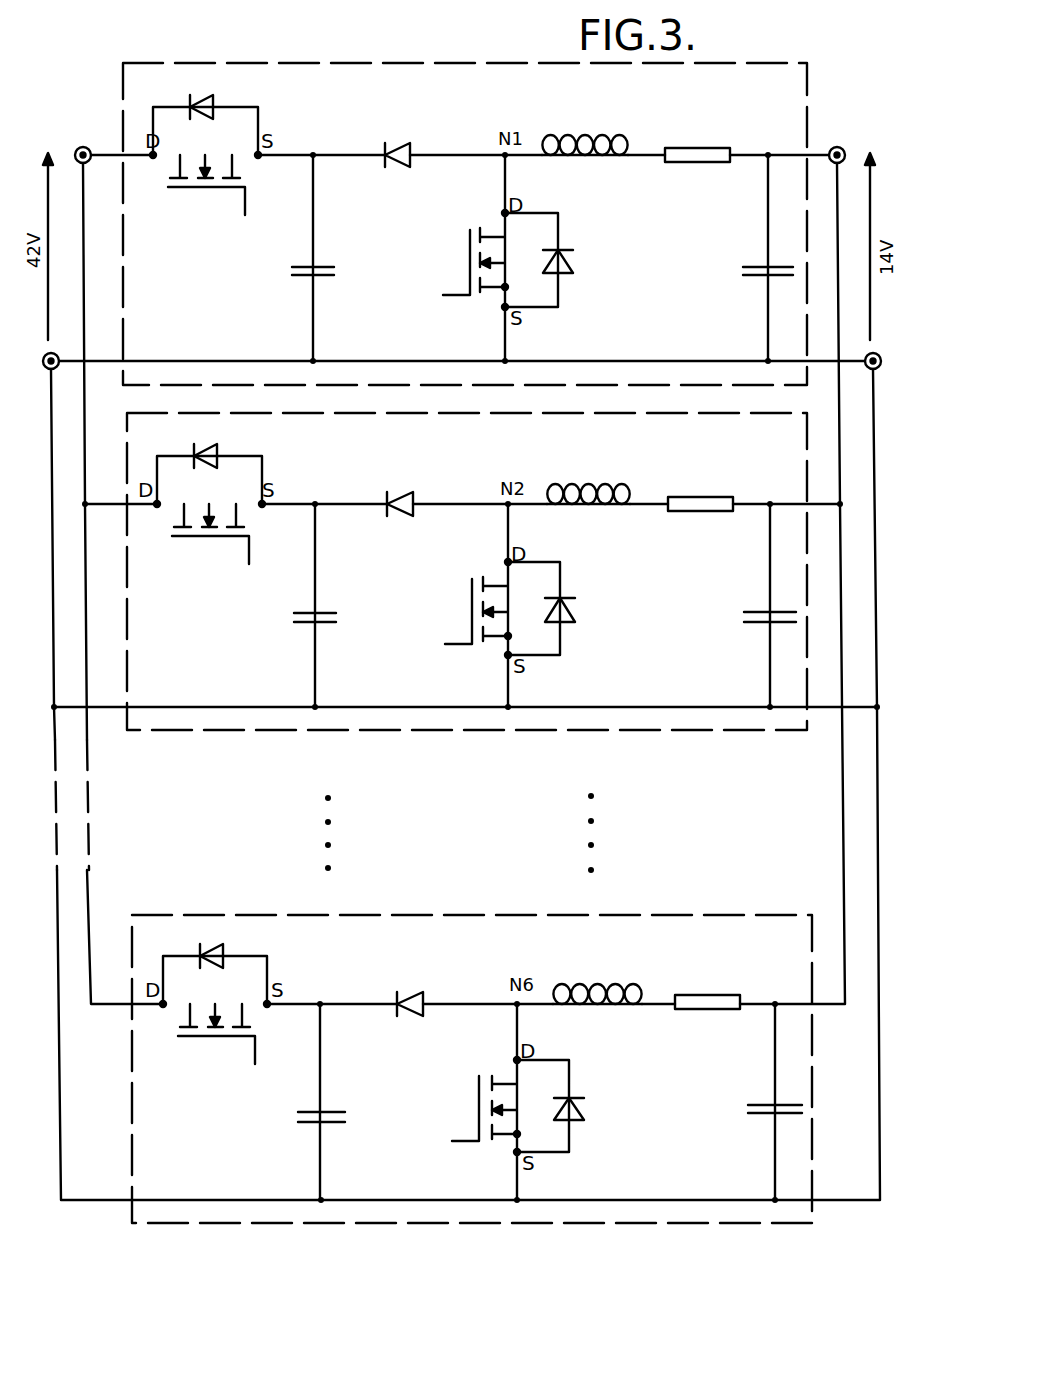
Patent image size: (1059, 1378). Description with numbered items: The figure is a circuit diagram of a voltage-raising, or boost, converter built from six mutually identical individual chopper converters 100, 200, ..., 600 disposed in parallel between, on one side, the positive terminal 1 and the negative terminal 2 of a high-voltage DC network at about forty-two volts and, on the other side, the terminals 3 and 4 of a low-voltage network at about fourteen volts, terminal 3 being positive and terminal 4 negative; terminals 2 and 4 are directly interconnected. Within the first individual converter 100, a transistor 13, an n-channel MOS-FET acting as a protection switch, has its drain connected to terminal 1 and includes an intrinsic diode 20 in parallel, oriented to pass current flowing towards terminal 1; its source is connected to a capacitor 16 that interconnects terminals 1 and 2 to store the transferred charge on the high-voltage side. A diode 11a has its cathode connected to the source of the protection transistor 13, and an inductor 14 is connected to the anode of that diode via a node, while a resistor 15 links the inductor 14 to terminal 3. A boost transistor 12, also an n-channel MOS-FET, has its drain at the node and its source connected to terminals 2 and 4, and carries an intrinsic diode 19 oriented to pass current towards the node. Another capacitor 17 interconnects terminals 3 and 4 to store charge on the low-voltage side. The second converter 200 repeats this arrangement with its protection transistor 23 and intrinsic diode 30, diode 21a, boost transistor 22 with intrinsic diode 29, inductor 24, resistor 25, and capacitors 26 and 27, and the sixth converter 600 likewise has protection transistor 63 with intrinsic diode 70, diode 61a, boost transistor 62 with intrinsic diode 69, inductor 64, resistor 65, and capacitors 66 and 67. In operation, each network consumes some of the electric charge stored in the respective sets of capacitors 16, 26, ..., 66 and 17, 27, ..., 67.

The positive terminal 1 is at (75, 147).
The negative terminal 2 is at (47, 354).
The terminal 3 is at (838, 147).
The terminal 4 is at (877, 355).
The individual chopper converter 100 is at (737, 62).
The individual chopper converter 200 is at (738, 415).
The individual chopper converter 600 is at (720, 912).
The transistor 13 is at (221, 117).
The intrinsic diode 20 is at (214, 69).
The diode 11a is at (398, 165).
The boost transistor 12 is at (532, 258).
The intrinsic diode 19 is at (583, 256).
The inductor 14 is at (601, 162).
The resistor 15 is at (690, 152).
The capacitor 16 is at (320, 278).
The capacitor 17 is at (755, 272).
The transistor 23 is at (229, 491).
The intrinsic diode 30 is at (239, 443).
The diode 21a is at (410, 512).
The boost transistor 22 is at (534, 605).
The intrinsic diode 29 is at (589, 615).
The inductor 24 is at (597, 512).
The resistor 25 is at (700, 500).
The capacitor 26 is at (330, 620).
The capacitor 27 is at (752, 610).
The transistor 63 is at (232, 967).
The intrinsic diode 70 is at (225, 919).
The diode 61a is at (415, 1014).
The boost transistor 62 is at (543, 1102).
The intrinsic diode 69 is at (594, 1110).
The inductor 64 is at (605, 1010).
The resistor 65 is at (728, 1008).
The capacitor 66 is at (345, 1112).
The capacitor 67 is at (760, 1112).